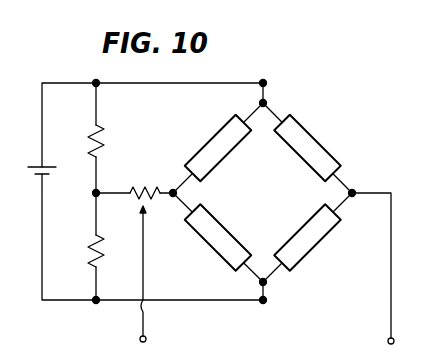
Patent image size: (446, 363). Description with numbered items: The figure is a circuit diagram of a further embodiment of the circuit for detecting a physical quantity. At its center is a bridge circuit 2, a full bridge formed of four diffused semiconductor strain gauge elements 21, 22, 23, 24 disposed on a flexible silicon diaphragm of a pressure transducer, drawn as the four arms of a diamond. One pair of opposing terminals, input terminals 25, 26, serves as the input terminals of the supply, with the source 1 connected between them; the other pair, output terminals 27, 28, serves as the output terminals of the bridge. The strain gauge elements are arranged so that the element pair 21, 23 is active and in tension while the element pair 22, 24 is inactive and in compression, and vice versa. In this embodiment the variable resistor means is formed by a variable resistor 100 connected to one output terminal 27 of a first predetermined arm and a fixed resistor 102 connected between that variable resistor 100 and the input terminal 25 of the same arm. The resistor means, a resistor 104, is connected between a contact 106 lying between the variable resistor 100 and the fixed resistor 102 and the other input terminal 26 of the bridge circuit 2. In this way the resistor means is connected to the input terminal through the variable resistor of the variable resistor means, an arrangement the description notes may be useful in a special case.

The source 1 is at (38, 161).
The bridge circuit 2 is at (259, 191).
The strain gauge element 21 is at (219, 136).
The strain gauge element 22 is at (204, 244).
The strain gauge element 23 is at (331, 236).
The strain gauge element 24 is at (299, 129).
The input terminal 25 is at (266, 83).
The input terminal 26 is at (266, 300).
The output terminal 27 is at (176, 193).
The output terminal 28 is at (354, 190).
The variable resistor 100 is at (134, 180).
The fixed resistor 102 is at (103, 134).
The resistor 104 is at (90, 264).
The contact 106 is at (93, 195).